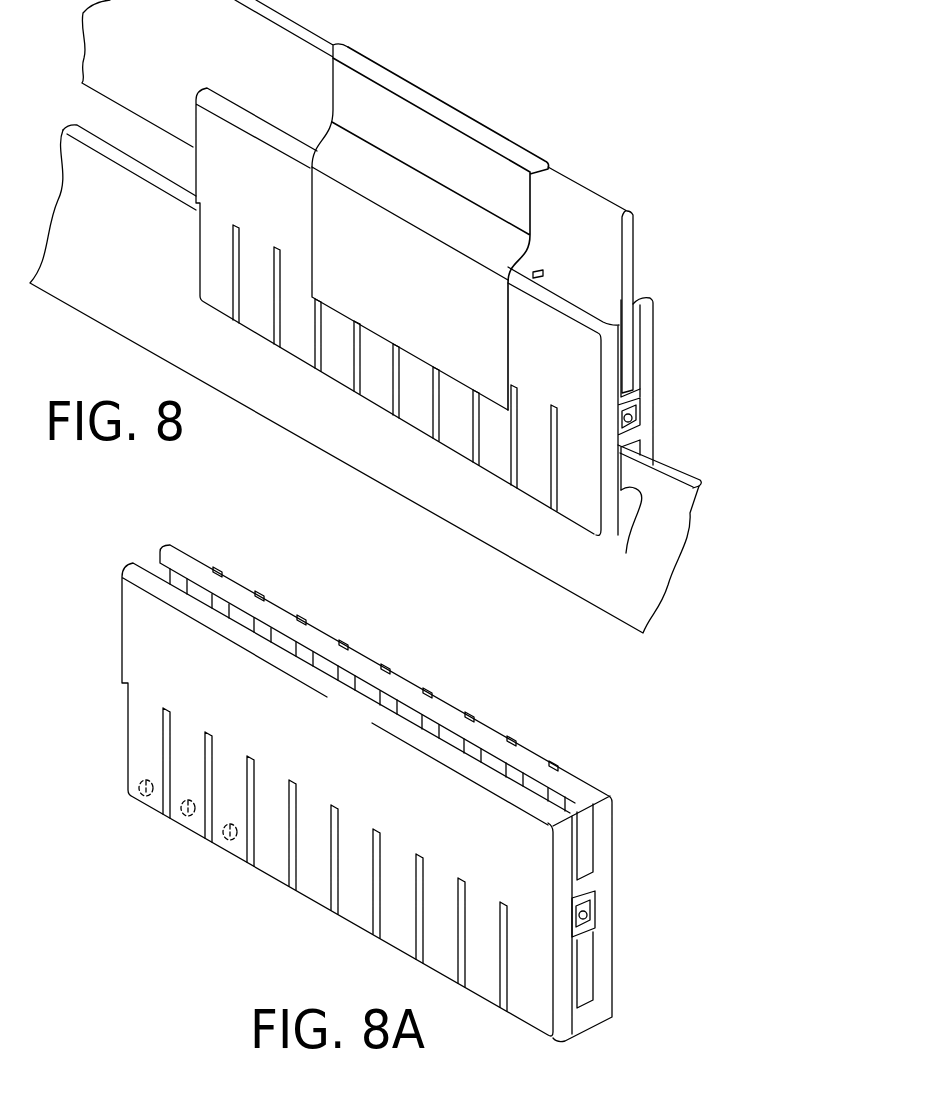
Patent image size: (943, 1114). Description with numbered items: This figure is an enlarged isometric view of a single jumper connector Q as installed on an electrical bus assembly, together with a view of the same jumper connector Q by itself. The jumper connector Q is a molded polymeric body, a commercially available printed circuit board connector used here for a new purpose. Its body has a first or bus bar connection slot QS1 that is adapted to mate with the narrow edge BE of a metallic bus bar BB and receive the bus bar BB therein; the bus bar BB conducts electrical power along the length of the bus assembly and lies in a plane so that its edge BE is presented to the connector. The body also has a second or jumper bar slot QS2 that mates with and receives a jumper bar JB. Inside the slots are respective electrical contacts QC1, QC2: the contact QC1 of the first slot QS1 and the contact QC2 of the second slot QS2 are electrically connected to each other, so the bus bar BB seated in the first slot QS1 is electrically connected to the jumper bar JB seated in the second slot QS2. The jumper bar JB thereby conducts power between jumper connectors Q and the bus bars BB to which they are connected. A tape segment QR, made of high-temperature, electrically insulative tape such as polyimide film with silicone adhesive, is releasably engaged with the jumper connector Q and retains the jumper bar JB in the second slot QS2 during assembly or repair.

In FIG. 8, the tape segment QR is at (497, 147).
In FIG. 8, the jumper bar JB is at (603, 257).
In FIG. 8, the second or jumper bar slot QS2 is at (627, 347).
In FIG. 8A, the second or jumper bar slot QS2 is at (583, 832).
In FIG. 8, the jumper connector Q is at (648, 398).
In FIG. 8A, the jumper connector Q is at (602, 882).
In FIG. 8, the narrow edge BE is at (687, 480).
In FIG. 8, the bus bar BB is at (668, 497).
In FIG. 8, the first or bus bar connection slot QS1 is at (629, 545).
In FIG. 8A, the first or bus bar connection slot QS1 is at (580, 963).
In FIG. 8A, the electrical contact of second slot QC2 is at (395, 700).
In FIG. 8A, the electrical contact of first slot QC1 is at (225, 840).